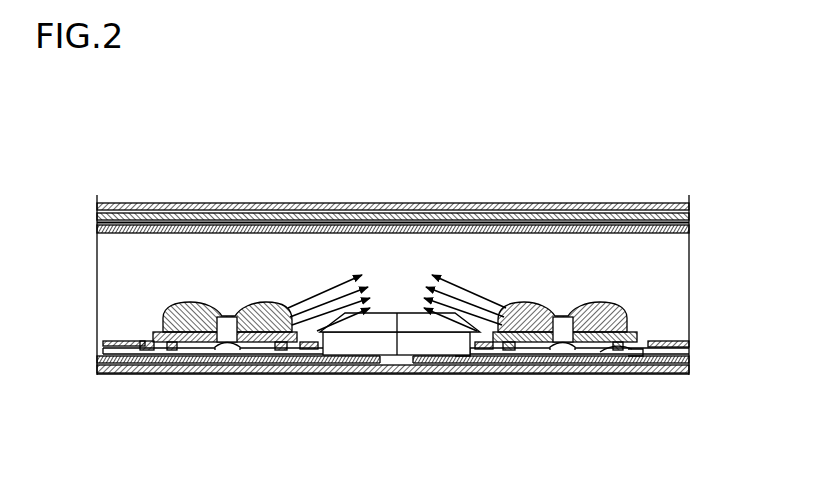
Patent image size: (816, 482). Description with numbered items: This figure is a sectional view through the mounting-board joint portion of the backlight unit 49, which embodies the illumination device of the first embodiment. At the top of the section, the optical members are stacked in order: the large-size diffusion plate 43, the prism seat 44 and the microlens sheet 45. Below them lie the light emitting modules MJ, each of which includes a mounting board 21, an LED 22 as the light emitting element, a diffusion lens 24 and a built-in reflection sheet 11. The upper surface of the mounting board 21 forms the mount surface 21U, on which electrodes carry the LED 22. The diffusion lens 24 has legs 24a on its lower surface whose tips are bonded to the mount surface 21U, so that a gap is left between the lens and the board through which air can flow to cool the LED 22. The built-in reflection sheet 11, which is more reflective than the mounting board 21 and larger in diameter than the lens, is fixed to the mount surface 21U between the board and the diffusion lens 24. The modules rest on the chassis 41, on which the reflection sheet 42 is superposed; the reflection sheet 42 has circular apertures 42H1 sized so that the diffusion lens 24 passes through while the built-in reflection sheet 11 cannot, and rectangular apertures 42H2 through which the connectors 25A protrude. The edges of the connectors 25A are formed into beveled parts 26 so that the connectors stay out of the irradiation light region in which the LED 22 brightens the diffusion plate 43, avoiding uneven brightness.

The backlight unit 49 is at (393, 177).
The diffusion plate 43 is at (525, 218).
The prism seat 44 is at (580, 214).
The microlens sheet 45 is at (636, 207).
The diffusion lens 24 is at (218, 295).
The light emitting module MJ is at (226, 296).
The beveled part 26 is at (335, 330).
The connector 25A is at (387, 313).
The mount surface 21U is at (128, 342).
The reflection sheet 42 is at (657, 341).
The legs 24a is at (137, 374).
The LED 22 is at (195, 374).
The mounting board 21 is at (268, 374).
The chassis 41 is at (400, 349).
The aperture 42H2 is at (462, 356).
The aperture 42H1 is at (635, 374).
The built-in reflection sheet 11 is at (673, 374).